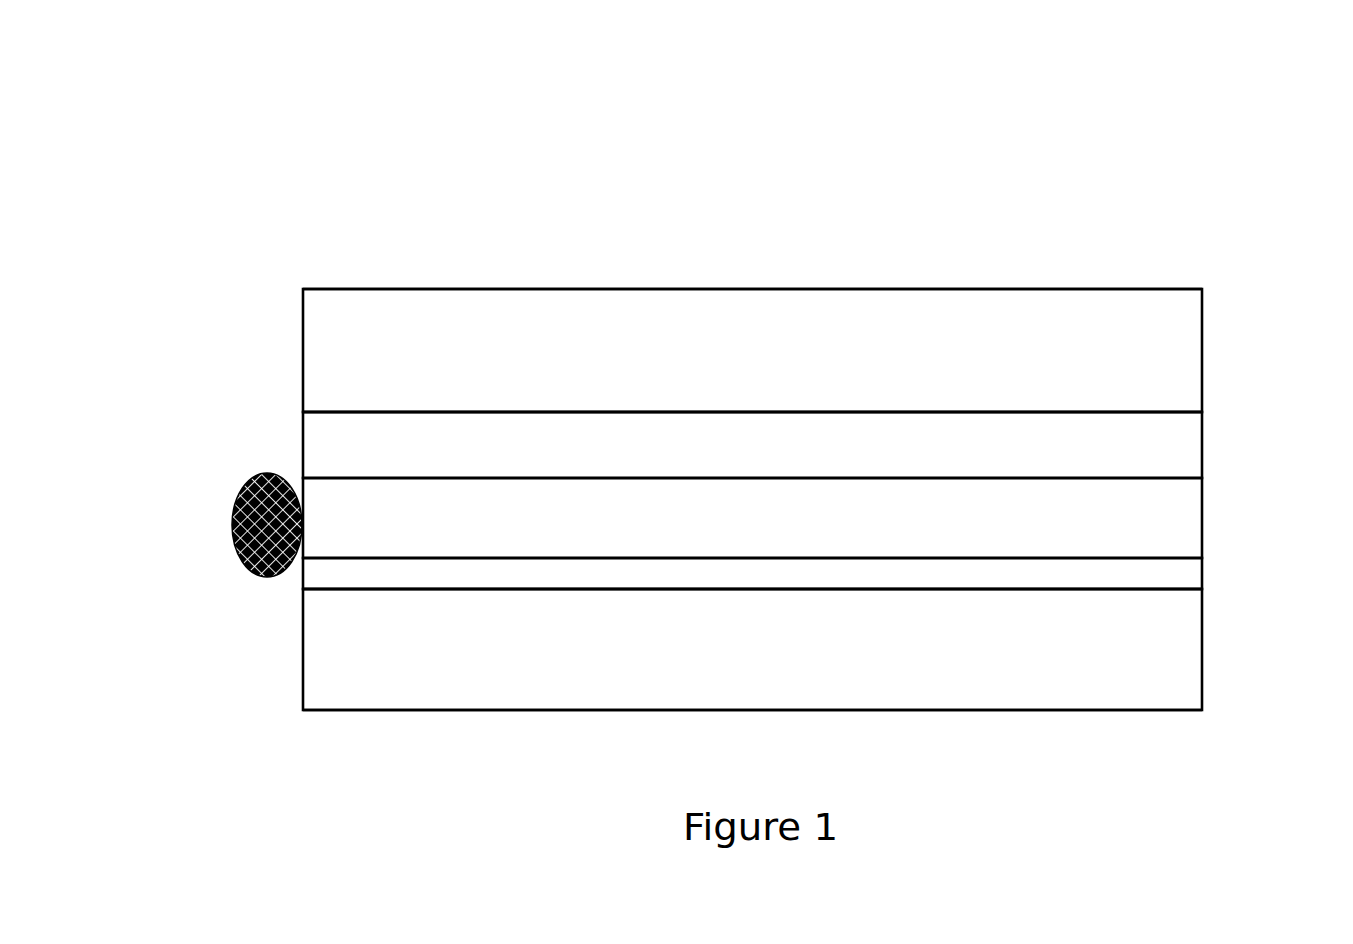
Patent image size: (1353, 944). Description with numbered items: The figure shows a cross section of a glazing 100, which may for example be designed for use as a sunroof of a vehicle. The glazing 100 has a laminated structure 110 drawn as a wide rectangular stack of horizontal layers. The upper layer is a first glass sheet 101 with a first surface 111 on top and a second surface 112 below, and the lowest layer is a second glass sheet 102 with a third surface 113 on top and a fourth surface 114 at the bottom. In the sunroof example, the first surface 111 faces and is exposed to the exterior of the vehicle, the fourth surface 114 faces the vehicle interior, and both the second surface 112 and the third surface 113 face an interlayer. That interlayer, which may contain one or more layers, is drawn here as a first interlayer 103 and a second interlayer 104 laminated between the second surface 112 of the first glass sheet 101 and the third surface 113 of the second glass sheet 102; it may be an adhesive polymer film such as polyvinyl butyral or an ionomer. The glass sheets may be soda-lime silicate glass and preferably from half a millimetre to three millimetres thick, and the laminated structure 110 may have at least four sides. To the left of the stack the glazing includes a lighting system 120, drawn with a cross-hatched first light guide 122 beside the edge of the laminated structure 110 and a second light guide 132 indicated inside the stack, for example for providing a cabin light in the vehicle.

The glazing 100 is at (340, 163).
The laminated structure 110 is at (1212, 281).
The first glass sheet 101 is at (1182, 345).
The second glass sheet 102 is at (1176, 647).
The first interlayer 103 is at (1189, 442).
The second interlayer 104 is at (1189, 575).
The first surface 111 is at (771, 281).
The second surface 112 is at (771, 406).
The third surface 113 is at (771, 622).
The fourth surface 114 is at (771, 702).
The lighting system 120 is at (190, 478).
The first light guide 122 is at (231, 553).
The second light guide 132 is at (337, 498).